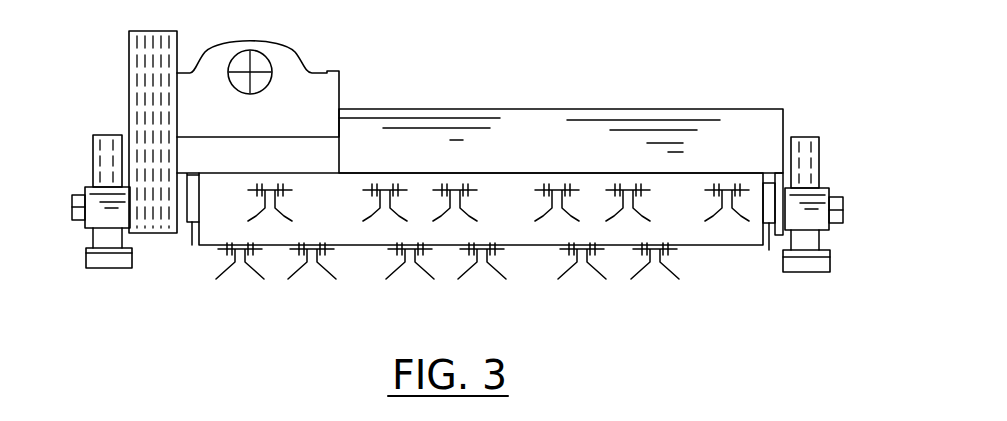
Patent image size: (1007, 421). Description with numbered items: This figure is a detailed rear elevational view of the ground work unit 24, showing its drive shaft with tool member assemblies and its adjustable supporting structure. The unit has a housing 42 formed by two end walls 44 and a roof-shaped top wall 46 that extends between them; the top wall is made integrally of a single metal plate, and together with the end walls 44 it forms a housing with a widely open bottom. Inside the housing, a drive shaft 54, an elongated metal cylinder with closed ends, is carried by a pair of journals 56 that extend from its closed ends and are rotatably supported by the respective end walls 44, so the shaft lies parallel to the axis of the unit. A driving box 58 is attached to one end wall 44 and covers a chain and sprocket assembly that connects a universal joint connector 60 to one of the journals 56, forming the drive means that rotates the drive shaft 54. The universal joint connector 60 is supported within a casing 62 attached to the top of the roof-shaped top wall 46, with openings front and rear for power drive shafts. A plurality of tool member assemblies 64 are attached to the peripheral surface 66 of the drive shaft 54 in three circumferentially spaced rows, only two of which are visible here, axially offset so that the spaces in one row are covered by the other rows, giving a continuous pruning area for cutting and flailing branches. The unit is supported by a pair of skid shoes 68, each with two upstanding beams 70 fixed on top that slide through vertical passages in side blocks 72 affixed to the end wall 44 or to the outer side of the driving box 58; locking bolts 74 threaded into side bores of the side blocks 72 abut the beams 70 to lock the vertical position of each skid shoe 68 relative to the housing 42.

The ground work unit 24 is at (640, 59).
The housing 42 is at (561, 112).
The end walls 44 is at (178, 234).
The roof-shaped top wall 46 is at (483, 109).
The drive shaft 54 is at (695, 245).
The journals 56 is at (197, 245).
The driving box 58 is at (129, 46).
The universal joint connector 60 is at (253, 54).
The casing 62 is at (330, 72).
The tool member assemblies 64 is at (473, 274).
The peripheral surface 66 is at (447, 285).
The skid shoes 68 is at (103, 270).
The upstanding beams 70 is at (93, 138).
The side blocks 72 is at (87, 190).
The locking bolts 74 is at (72, 212).